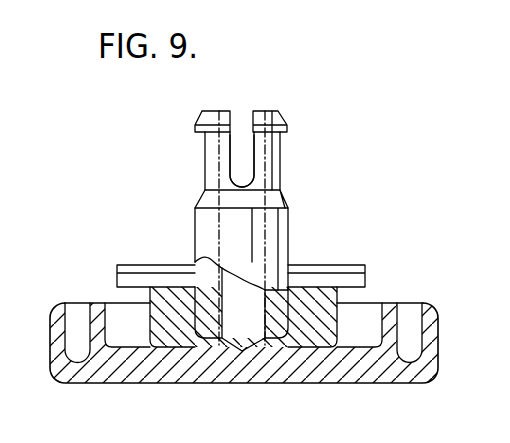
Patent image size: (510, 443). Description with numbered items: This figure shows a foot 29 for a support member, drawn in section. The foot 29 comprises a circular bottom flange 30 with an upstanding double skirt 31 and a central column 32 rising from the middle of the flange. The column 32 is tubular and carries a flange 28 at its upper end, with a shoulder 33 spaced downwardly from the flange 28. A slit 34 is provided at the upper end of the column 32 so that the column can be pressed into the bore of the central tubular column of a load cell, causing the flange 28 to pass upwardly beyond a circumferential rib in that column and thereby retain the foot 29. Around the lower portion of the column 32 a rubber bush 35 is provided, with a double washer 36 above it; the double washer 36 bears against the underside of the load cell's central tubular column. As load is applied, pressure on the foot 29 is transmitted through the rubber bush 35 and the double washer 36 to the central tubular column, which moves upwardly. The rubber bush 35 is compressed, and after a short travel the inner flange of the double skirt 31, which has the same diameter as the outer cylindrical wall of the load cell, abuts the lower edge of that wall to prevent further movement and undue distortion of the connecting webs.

The flange 28 is at (287, 126).
The foot 29 is at (432, 231).
The circular bottom flange 30 is at (337, 365).
The double skirt 31 is at (432, 308).
The central column 32 is at (278, 238).
The shoulder 33 is at (283, 201).
The slit 34 is at (241, 127).
The rubber bush 35 is at (165, 303).
The double washer 36 is at (363, 280).